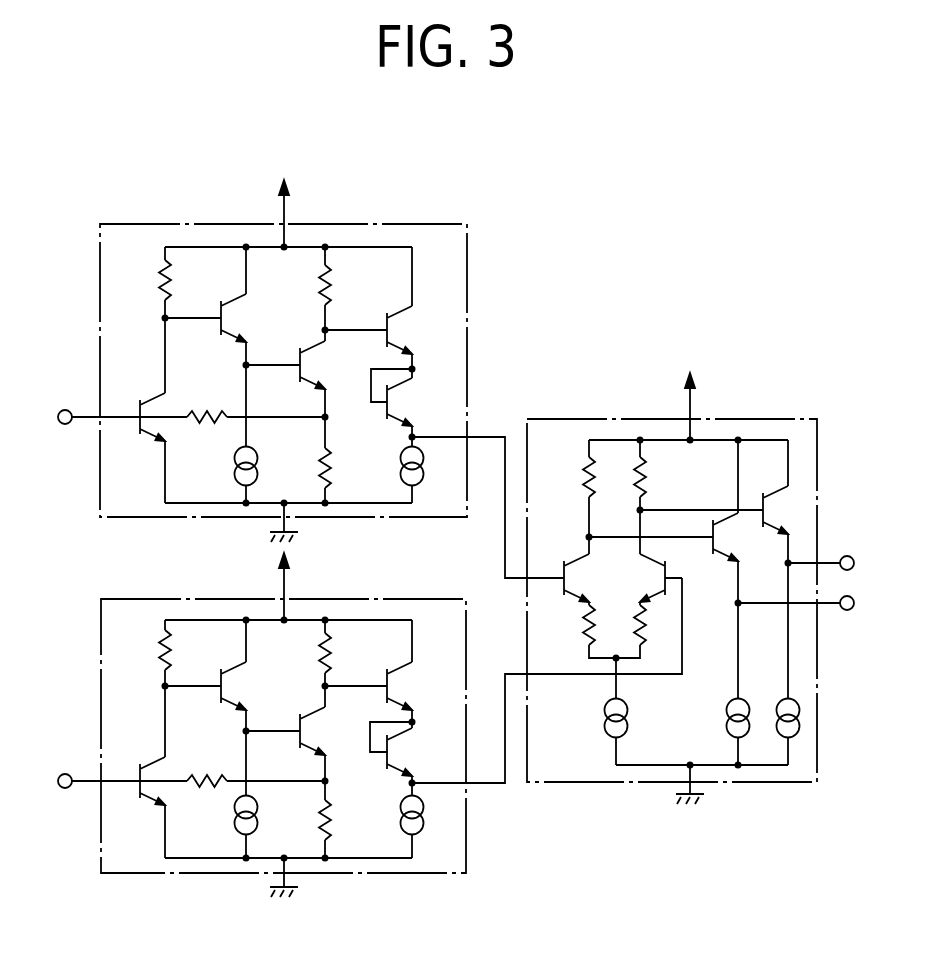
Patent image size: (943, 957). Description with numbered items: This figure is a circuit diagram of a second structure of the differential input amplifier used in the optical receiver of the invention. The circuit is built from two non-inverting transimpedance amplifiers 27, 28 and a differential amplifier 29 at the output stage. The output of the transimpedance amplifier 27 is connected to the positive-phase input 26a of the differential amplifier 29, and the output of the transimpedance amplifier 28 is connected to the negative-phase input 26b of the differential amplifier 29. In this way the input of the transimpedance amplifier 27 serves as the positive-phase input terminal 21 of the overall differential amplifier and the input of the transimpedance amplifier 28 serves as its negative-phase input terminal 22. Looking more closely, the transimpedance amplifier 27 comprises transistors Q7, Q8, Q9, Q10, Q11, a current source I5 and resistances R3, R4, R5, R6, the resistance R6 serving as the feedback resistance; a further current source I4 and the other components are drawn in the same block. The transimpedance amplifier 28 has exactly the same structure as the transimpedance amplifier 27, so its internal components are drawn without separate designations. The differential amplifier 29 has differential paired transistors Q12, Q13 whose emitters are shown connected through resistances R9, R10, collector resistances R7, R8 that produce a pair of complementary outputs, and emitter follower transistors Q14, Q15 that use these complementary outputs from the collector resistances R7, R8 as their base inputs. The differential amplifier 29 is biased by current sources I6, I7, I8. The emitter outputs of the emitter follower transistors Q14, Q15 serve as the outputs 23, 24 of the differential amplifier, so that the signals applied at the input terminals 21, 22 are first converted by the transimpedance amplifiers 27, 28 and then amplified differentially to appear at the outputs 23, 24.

The positive-phase input terminal 21 is at (64, 410).
The negative-phase input terminal 22 is at (64, 774).
The output 23 is at (850, 556).
The output 24 is at (847, 610).
The positive-phase input 26a is at (505, 553).
The negative-phase input 26b is at (510, 673).
The transimpedance amplifier 27 is at (421, 224).
The transimpedance amplifier 28 is at (135, 873).
The differential amplifier 29 is at (777, 419).
The resistance R3 is at (160, 283).
The resistance R4 is at (331, 290).
The resistance R5 is at (319, 467).
The feedback resistance R6 is at (202, 410).
The collector resistance R7 is at (583, 482).
The collector resistance R8 is at (648, 480).
The resistor R9 is at (579, 622).
The resistor R10 is at (650, 636).
The transistor Q7 is at (150, 398).
The transistor Q8 is at (228, 321).
The transistor Q9 is at (303, 365).
The transistor Q10 is at (392, 334).
The transistor Q11 is at (392, 404).
The differential paired transistor Q12 is at (574, 558).
The differential paired transistor Q13 is at (628, 578).
The emitter follower transistor Q14 is at (727, 557).
The emitter follower transistor Q15 is at (773, 495).
The constant current source I4 is at (234, 467).
The current source I5 is at (400, 467).
The current source I6 is at (630, 718).
The current source I7 is at (725, 719).
The current source I8 is at (802, 719).